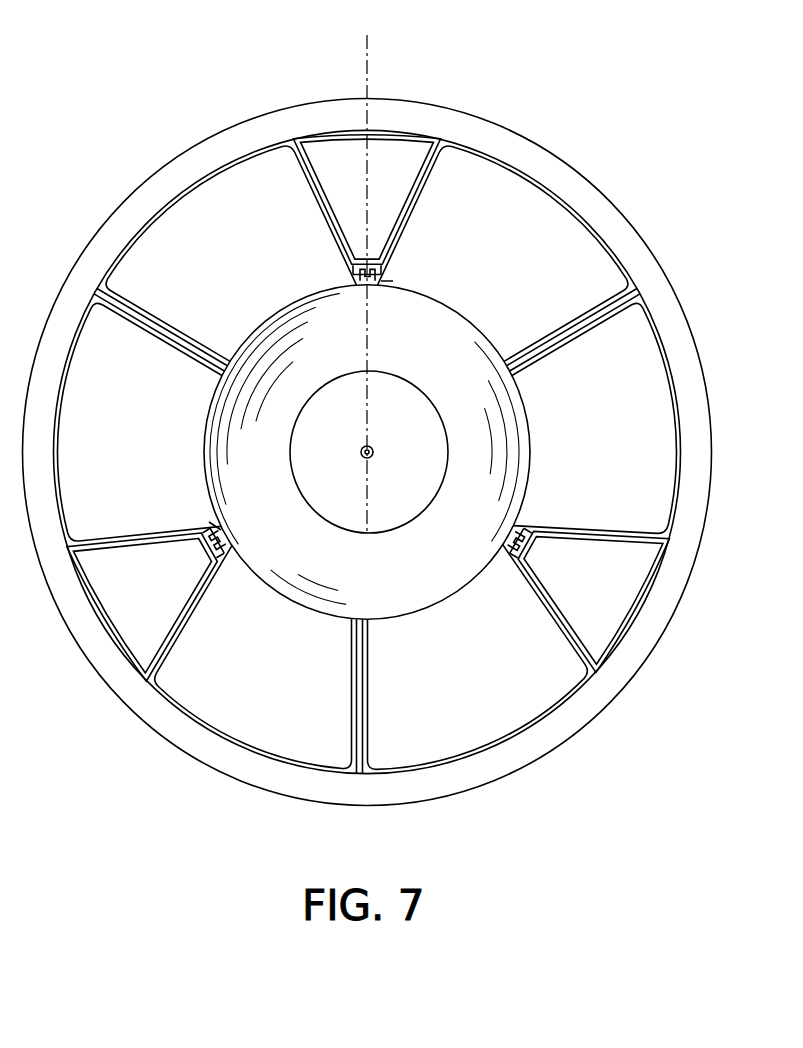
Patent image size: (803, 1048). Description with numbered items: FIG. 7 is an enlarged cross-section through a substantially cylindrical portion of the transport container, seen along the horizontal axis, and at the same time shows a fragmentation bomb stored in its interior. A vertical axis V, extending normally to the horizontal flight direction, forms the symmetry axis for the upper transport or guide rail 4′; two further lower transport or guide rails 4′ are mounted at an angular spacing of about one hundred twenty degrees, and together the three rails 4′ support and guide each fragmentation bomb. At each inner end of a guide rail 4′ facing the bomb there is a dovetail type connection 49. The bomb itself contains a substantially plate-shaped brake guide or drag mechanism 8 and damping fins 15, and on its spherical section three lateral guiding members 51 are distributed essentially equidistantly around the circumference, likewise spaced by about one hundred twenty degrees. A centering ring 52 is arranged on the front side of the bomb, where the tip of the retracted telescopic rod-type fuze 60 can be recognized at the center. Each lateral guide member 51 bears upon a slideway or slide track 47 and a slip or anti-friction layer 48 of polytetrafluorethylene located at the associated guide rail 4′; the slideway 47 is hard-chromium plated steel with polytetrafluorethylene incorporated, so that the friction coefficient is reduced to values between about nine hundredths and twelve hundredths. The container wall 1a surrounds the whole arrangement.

The rim 1a is at (549, 189).
The transport or guide rail 4′ is at (427, 155).
The brake guide or drag mechanism 8 is at (268, 168).
The damping fins 15 is at (138, 318).
The slideway or slide track 47 is at (518, 530).
The slip or anti-friction layer 48 is at (388, 278).
The dovetail type connection 49 is at (217, 545).
The lateral guiding members 51 is at (390, 283).
The centering ring 52 is at (288, 444).
The telescopic rod-type fuze 60 is at (361, 447).
The vertical axis V is at (371, 57).